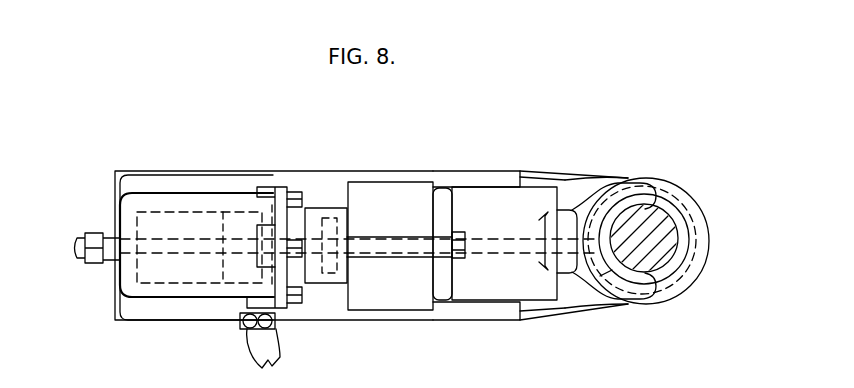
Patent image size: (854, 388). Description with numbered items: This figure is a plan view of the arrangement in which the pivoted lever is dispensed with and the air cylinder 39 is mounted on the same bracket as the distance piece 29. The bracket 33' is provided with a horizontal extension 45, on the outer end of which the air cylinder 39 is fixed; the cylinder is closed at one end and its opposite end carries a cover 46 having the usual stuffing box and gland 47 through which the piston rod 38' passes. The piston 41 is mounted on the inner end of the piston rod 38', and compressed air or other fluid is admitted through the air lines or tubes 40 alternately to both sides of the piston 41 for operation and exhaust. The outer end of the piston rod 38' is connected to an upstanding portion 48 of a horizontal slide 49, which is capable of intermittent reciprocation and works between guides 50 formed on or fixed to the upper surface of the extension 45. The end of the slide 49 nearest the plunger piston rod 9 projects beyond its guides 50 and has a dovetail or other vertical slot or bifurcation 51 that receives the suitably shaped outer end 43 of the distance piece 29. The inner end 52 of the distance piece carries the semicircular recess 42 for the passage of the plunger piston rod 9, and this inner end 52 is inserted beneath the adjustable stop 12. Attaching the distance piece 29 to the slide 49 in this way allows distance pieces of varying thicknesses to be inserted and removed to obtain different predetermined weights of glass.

The plunger piston rod 9 is at (664, 263).
The adjustable stop 12 is at (678, 219).
The distance piece 29 is at (637, 240).
The bracket 33' is at (672, 241).
The piston rod 38' is at (406, 232).
The air cylinder 39 is at (165, 300).
The air lines or tubes 40 is at (77, 241).
The piston 41 is at (223, 228).
The semicircular recess 42 is at (633, 264).
The dovetailed end 43 is at (566, 275).
The horizontal extension 45 is at (373, 318).
The cover 46 is at (277, 187).
The stuffing box and gland 47 is at (342, 275).
The upstanding portion 48 is at (443, 190).
The horizontal slide 49 is at (504, 243).
The guides 50 is at (514, 173).
The dovetail or vertical slot or bifurcation 51 is at (546, 215).
The inner end 52 is at (650, 208).